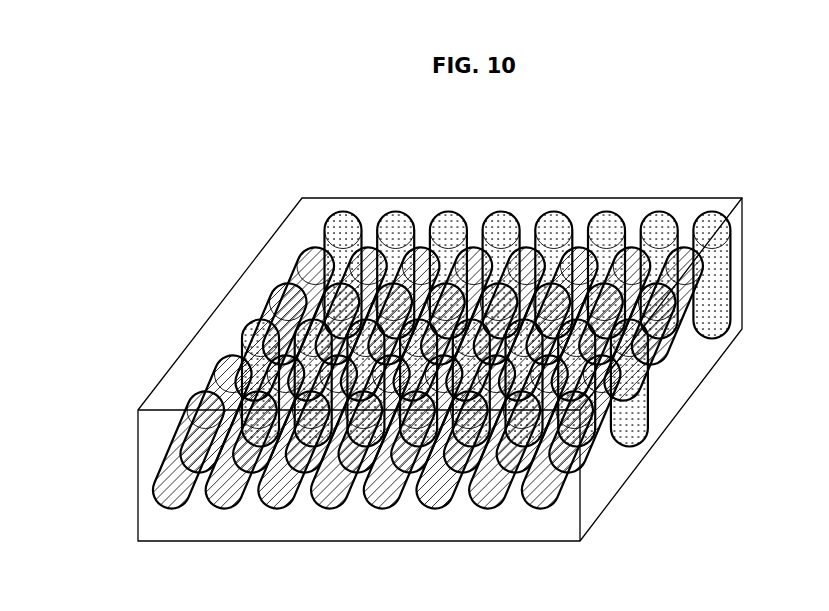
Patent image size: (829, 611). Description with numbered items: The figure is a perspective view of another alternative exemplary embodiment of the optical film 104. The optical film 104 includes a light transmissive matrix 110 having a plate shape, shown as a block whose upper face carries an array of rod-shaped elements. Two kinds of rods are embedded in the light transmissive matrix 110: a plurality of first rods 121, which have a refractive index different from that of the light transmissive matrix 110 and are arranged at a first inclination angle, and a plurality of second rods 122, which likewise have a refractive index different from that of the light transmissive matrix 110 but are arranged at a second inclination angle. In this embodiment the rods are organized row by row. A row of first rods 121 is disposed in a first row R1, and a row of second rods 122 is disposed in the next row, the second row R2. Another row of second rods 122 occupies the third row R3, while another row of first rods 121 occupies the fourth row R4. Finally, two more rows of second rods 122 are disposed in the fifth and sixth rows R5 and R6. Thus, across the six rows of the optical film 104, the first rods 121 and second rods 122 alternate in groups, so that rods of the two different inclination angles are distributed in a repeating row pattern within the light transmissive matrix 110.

The optical film 104 is at (208, 207).
The light transmissive matrix 110 is at (525, 212).
The first rods 121 is at (445, 220).
The second rods 122 is at (370, 247).
The first row R1 is at (747, 288).
The second row R2 is at (719, 323).
The third row R3 is at (691, 360).
The fourth row R4 is at (664, 395).
The fifth row R5 is at (637, 430).
The sixth row R6 is at (609, 465).